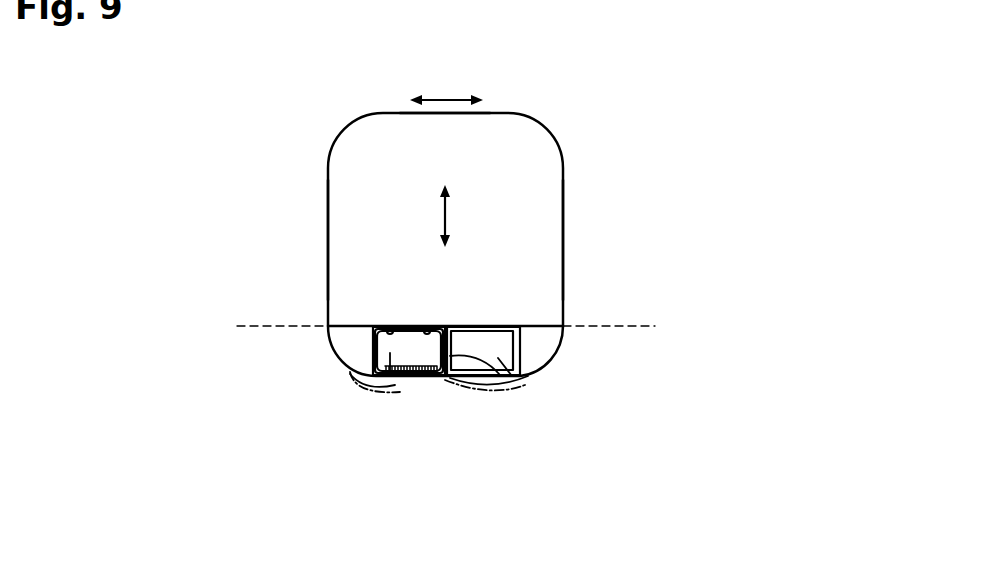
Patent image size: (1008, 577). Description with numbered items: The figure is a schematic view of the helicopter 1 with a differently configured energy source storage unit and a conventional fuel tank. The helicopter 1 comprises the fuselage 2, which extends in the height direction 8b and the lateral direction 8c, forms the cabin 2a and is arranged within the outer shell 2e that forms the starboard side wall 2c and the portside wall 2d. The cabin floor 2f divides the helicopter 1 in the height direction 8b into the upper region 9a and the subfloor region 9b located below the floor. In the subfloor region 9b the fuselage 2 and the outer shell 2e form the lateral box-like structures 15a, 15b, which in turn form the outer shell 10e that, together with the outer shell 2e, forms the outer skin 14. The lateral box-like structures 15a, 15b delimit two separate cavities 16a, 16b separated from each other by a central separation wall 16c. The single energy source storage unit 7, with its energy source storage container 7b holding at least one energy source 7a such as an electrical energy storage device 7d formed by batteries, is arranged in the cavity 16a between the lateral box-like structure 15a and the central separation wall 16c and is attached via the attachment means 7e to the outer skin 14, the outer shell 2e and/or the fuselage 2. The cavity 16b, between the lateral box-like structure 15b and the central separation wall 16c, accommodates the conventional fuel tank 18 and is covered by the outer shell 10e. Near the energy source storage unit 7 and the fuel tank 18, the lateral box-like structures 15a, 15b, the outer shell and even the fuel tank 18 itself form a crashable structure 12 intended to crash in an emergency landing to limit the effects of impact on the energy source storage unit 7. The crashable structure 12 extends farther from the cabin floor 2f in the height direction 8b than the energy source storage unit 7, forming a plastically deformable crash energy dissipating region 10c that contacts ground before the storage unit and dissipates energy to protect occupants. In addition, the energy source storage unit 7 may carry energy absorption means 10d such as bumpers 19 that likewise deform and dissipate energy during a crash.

The helicopter 1 is at (296, 126).
The fuselage 2 is at (574, 178).
The cabin 2a is at (501, 204).
The starboard side wall 2c is at (318, 203).
The portside wall 2d is at (576, 240).
The outer shell 2e is at (563, 142).
The cabin floor 2f is at (520, 326).
The energy source storage unit 7 is at (447, 378).
The energy source 7a is at (356, 333).
The energy source storage container 7b is at (404, 380).
The electrical energy storage device 7d is at (390, 372).
The attachment means 7e is at (427, 328).
The height direction 8b is at (446, 210).
The lateral direction 8c is at (445, 100).
The upper region 9a is at (666, 197).
The subfloor region 9b is at (669, 371).
The crash energy dissipating region 10c is at (375, 382).
The energy absorption means 10d is at (438, 396).
The outer shell 10e is at (350, 378).
The crashable structure 12 is at (364, 396).
The outer skin 14 is at (328, 178).
The lateral box-like structure 15a is at (348, 348).
The lateral box-like structure 15b is at (550, 342).
The cavity 16a is at (406, 317).
The cavity 16b is at (484, 318).
The central separation wall 16c is at (495, 383).
The fuel tank 18 is at (520, 390).
The bumper 19 is at (423, 380).